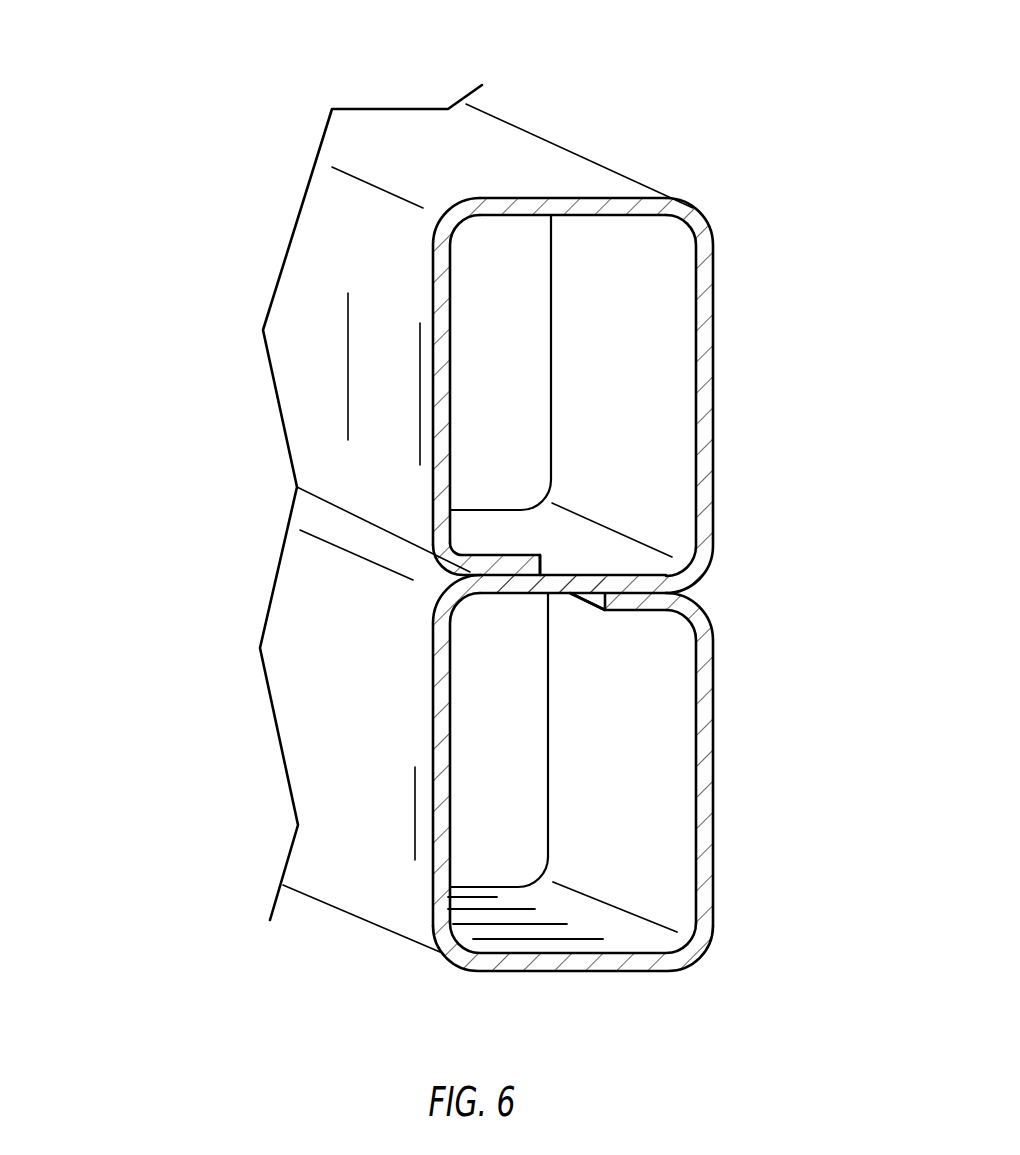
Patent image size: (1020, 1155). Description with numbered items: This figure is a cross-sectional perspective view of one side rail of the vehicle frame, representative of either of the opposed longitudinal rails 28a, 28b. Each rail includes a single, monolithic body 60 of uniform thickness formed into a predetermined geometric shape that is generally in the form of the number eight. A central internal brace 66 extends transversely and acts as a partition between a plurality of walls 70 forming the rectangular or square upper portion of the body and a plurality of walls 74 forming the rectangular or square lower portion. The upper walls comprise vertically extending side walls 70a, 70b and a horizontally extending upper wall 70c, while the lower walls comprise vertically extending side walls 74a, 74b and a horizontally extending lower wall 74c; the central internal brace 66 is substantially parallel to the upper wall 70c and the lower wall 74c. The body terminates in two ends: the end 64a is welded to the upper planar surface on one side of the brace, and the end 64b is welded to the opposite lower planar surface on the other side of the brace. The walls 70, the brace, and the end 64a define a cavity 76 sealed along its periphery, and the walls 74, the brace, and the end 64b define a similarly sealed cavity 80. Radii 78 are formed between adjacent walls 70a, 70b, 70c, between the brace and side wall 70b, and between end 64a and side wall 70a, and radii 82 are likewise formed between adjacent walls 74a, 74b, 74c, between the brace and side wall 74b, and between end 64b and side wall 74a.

The rail 28a is at (245, 325).
The rail 28b is at (488, 528).
The single, monolithic body 60 is at (262, 278).
The end 64a is at (487, 547).
The end 64b is at (632, 607).
The central internal brace 66 is at (570, 557).
The walls 70 is at (499, 304).
The side wall 70a is at (348, 257).
The side wall 70b is at (705, 345).
The upper wall 70c is at (447, 148).
The walls 74 is at (517, 793).
The side wall 74a is at (702, 797).
The side wall 74b is at (363, 710).
The lower wall 74c is at (620, 956).
The cavity 76 is at (527, 443).
The radii 78 is at (347, 157).
The cavity 80 is at (482, 857).
The radii 82 is at (413, 560).